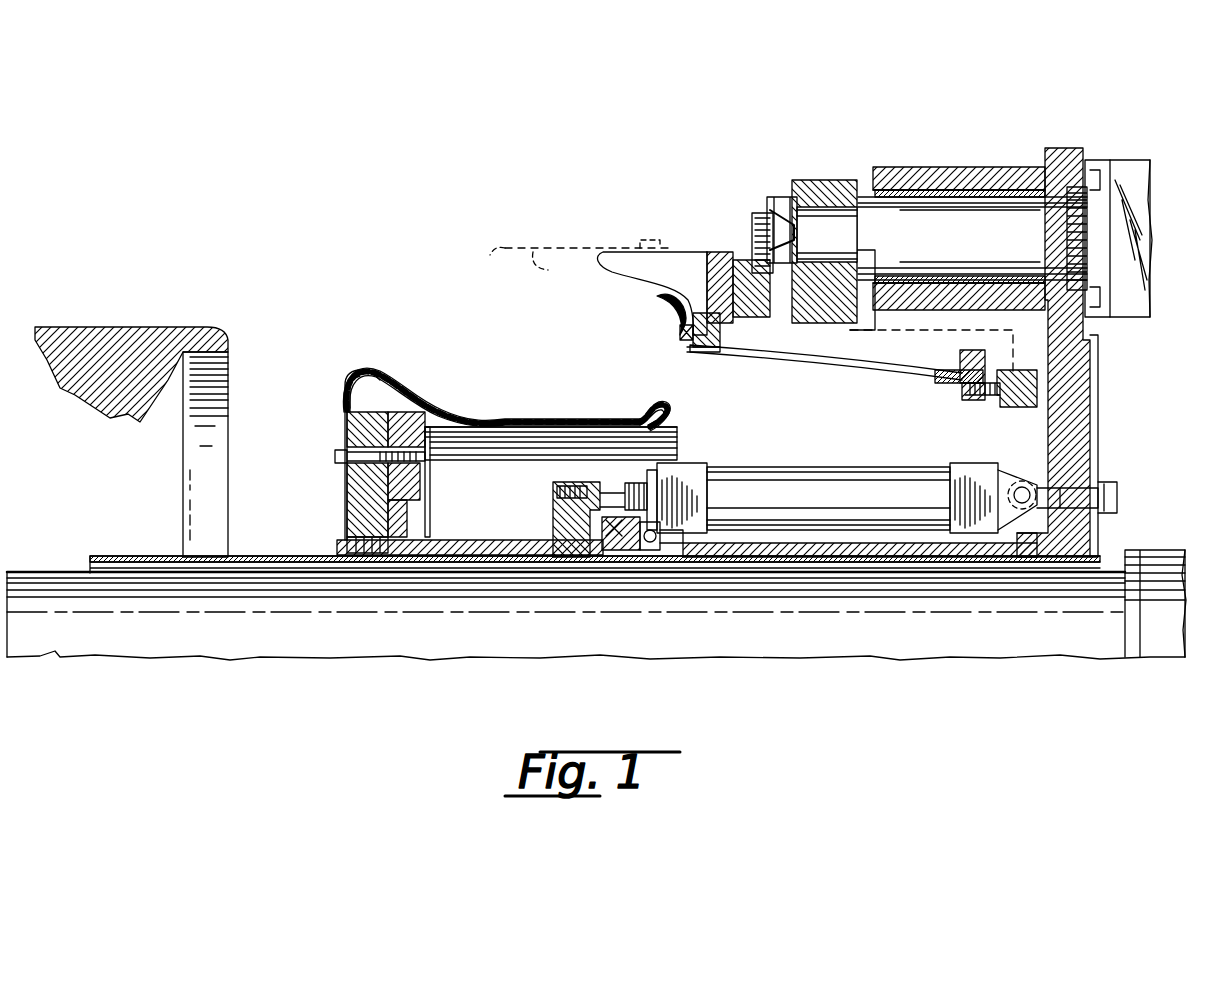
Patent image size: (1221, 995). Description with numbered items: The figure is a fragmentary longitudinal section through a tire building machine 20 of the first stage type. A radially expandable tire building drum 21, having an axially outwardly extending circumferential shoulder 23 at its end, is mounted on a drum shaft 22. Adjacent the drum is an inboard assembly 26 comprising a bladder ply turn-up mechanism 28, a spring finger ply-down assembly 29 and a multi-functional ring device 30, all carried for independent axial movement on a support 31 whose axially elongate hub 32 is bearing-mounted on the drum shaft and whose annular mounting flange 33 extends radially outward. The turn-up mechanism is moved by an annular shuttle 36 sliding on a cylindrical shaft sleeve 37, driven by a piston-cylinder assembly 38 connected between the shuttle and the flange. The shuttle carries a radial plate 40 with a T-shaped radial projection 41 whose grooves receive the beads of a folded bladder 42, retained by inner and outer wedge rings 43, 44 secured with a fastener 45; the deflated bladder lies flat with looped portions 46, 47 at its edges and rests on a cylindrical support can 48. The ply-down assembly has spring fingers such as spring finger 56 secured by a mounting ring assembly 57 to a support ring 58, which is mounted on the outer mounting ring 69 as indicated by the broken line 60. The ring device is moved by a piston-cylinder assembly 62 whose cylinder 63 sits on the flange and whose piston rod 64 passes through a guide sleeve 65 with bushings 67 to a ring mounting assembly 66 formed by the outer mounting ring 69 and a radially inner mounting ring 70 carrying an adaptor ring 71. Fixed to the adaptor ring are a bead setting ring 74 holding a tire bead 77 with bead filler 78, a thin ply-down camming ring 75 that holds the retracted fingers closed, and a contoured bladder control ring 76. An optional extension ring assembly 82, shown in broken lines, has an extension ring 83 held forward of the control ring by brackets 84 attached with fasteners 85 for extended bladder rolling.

The tire building machine 20 is at (312, 318).
The tire building drum 21 is at (125, 320).
The drum shaft 22 is at (297, 640).
The circumferential shoulder 23 is at (228, 336).
The inboard assembly 26 is at (1127, 148).
The bladder ply turn-up mechanism 28 is at (455, 393).
The spring finger ply-down assembly 29 is at (848, 374).
The multi-functional ring device 30 is at (585, 292).
The support 31 is at (1102, 398).
The hub 32 is at (872, 545).
The mounting flange 33 is at (1098, 450).
The shuttle 36 is at (494, 543).
The shaft sleeve 37 is at (268, 560).
The piston-cylinder assembly 38 is at (810, 468).
The radial plate 40 is at (345, 492).
The radial projection 41 is at (400, 410).
The bladder 42 is at (524, 410).
The inner wedge ring 43 is at (345, 420).
The outer wedge ring 44 is at (430, 445).
The fastener 45 is at (335, 456).
The folded portion 46 is at (347, 380).
The folded portion 47 is at (655, 405).
The support can 48 is at (683, 444).
The spring finger 56 is at (840, 366).
The mounting ring assembly 57 is at (960, 388).
The support ring 58 is at (1025, 408).
The broken line 60 is at (907, 340).
The piston-cylinder assembly 62 is at (1150, 228).
The cylinder 63 is at (1140, 318).
The piston rod 64 is at (965, 200).
The guide sleeve 65 is at (921, 167).
The ring mounting assembly 66 is at (790, 180).
The bushing 67 is at (900, 203).
The outer mounting ring 69 is at (825, 180).
The inner mounting ring 70 is at (738, 262).
The adaptor ring 71 is at (712, 252).
The bead setting ring 74 is at (722, 330).
The ply-down camming ring 75 is at (708, 352).
The bladder control ring 76 is at (636, 276).
The tire bead 77 is at (678, 333).
The bead filler 78 is at (660, 300).
The extension ring assembly 82 is at (572, 246).
The extension ring 83 is at (563, 251).
The bracket 84 is at (559, 270).
The fastener 85 is at (643, 238).